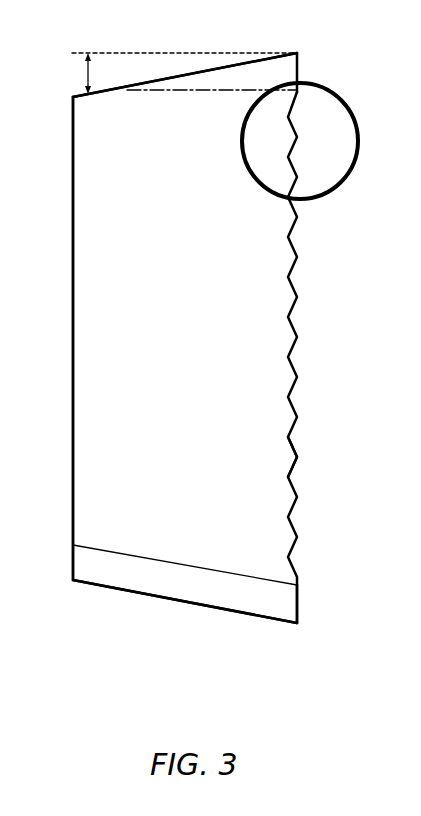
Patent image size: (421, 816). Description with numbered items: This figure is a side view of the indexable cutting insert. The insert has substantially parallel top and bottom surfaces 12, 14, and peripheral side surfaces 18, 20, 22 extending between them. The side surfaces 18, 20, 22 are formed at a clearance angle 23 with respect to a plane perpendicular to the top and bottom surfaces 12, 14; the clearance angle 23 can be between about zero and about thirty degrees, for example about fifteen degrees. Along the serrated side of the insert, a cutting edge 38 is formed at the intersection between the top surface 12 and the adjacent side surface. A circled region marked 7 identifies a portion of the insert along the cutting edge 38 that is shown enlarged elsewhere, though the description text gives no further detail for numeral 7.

The detail view indicator (FIG. 7) 7 is at (343, 100).
The top surface 12 is at (309, 439).
The bottom surface 14 is at (60, 274).
The peripheral side surface 18 is at (161, 612).
The peripheral side surface 20 is at (217, 62).
The peripheral side surface 22 is at (160, 390).
The clearance angle 23 is at (85, 71).
The cutting edge 38 is at (295, 328).